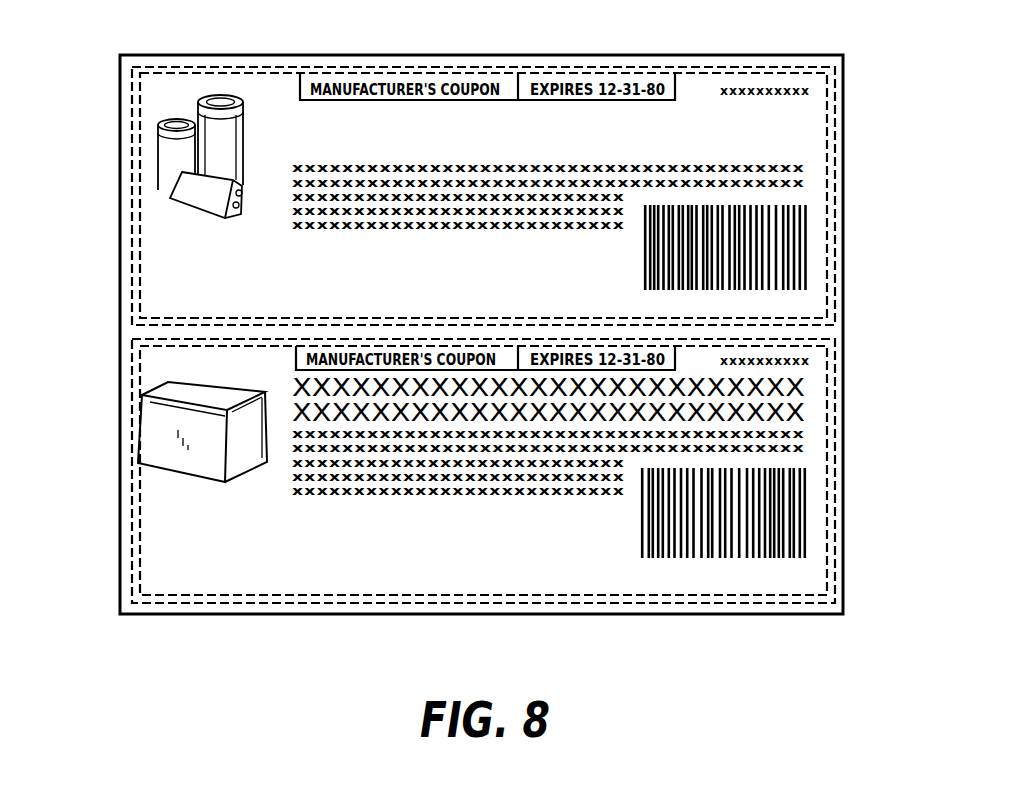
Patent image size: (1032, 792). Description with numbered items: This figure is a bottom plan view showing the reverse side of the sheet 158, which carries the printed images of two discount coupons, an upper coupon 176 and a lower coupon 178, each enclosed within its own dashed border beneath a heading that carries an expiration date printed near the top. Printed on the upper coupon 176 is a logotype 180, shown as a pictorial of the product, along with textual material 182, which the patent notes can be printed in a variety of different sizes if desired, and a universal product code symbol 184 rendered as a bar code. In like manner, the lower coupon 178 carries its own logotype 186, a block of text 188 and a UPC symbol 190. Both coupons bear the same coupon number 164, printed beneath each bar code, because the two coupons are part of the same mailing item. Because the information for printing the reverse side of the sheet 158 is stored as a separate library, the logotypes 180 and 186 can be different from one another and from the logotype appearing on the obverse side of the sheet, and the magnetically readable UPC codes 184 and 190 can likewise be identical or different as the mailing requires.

The sheet 158 is at (325, 55).
The logotype 180 is at (158, 140).
The coupon 176 is at (143, 263).
The textual material 182 is at (808, 124).
The universal product code (UPC) symbol 184 is at (793, 205).
The coupon number 164 is at (793, 305).
The logotype 186 is at (140, 428).
The coupon 178 is at (150, 478).
The text 188 is at (268, 565).
The UPC symbol 190 is at (803, 503).